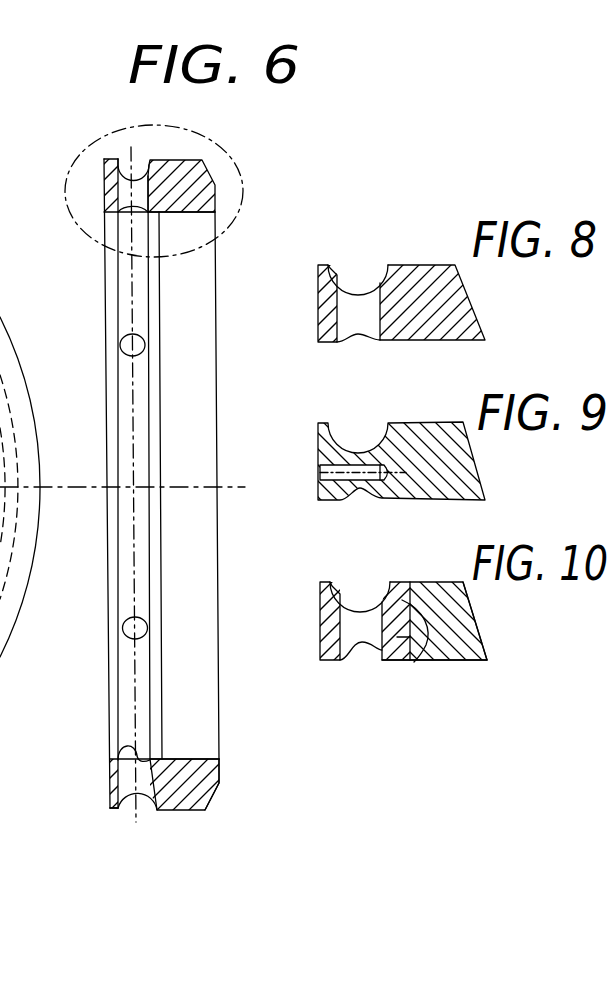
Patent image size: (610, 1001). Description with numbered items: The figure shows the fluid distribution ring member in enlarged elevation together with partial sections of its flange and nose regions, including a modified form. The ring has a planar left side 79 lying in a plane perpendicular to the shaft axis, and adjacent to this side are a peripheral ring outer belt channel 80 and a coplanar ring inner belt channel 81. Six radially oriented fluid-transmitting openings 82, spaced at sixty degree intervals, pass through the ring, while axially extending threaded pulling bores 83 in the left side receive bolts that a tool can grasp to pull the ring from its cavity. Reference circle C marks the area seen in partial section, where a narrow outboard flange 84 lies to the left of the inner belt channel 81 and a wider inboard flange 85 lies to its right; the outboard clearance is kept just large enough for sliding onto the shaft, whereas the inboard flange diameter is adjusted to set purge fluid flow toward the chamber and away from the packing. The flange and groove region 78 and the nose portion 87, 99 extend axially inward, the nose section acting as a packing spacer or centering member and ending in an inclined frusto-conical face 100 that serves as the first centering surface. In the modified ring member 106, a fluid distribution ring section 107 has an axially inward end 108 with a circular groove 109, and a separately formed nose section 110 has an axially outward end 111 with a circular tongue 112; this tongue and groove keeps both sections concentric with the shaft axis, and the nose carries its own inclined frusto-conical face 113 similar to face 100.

In FIG. 6, the flange and groove portion 78 is at (163, 822).
In FIG. 6, the planar left side 79 is at (108, 688).
In FIG. 6, the ring outer belt channel 80 is at (123, 165).
In FIG. 8, the ring outer belt channel 80 is at (352, 280).
In FIG. 6, the ring inner belt channel 81 is at (120, 208).
In FIG. 6, the fluid-transmitting openings 82 is at (121, 350).
In FIG. 8, the fluid-transmitting openings 82 is at (368, 310).
In FIG. 9, the pulling bores 83 is at (322, 477).
In FIG. 8, the outboard flange 84 is at (317, 348).
In FIG. 8, the inboard flange 85 is at (397, 341).
In FIG. 6, the nose section 87 is at (172, 822).
In FIG. 6, the rim portion 99 is at (305, 509).
In FIG. 6, the inclined frusto-conical face 100 is at (219, 788).
In FIG. 10, the ring member 106 is at (421, 713).
In FIG. 10, the fluid distribution ring section 107 is at (310, 632).
In FIG. 10, the axially inward end 108 is at (378, 588).
In FIG. 10, the circular groove 109 is at (387, 597).
In FIG. 10, the nose section 110 is at (466, 666).
In FIG. 10, the axially outward end 111 is at (358, 650).
In FIG. 10, the circular tongue 112 is at (414, 662).
In FIG. 10, the inclined frusto-conical face 113 is at (487, 645).
In FIG. 6, the reference circle C is at (200, 130).